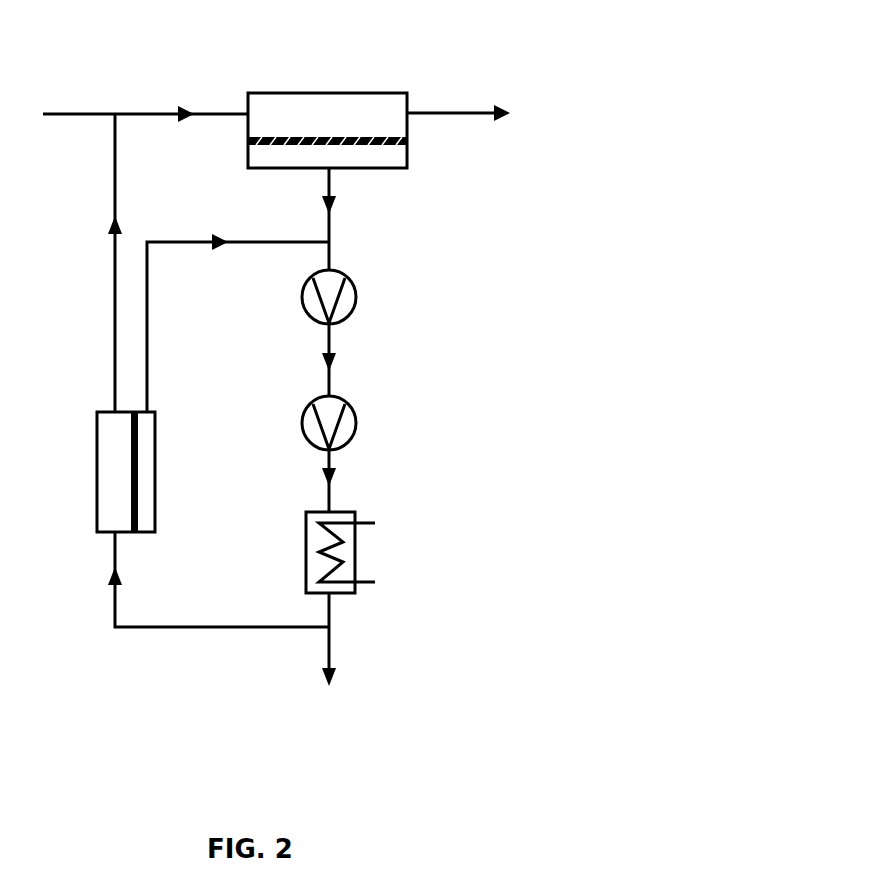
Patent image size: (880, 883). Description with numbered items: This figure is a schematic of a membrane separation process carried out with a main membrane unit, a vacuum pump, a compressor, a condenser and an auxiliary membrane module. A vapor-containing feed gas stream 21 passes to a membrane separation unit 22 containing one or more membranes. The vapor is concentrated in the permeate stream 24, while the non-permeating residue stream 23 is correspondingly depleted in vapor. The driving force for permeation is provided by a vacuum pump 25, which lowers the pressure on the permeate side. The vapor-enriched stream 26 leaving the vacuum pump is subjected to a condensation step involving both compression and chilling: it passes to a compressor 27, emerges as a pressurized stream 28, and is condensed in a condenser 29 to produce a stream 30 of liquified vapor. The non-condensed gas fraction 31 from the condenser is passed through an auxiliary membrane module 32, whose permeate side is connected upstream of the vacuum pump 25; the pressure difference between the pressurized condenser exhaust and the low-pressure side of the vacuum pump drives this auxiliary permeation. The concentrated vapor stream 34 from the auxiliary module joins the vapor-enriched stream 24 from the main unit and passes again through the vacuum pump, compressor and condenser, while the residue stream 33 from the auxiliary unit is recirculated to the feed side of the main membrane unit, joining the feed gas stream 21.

The vapor-containing feed gas stream 21 is at (145, 101).
The membrane separation unit 22 is at (318, 93).
The residue stream 23 is at (476, 113).
The permeate stream 24 is at (345, 219).
The vacuum pump 25 is at (356, 297).
The vapor-enriched stream 26 is at (312, 360).
The compressor 27 is at (356, 405).
The pressurized stream 28 is at (312, 481).
The condenser 29 is at (355, 512).
The liquified vapor stream 30 is at (330, 657).
The non-condensed gas fraction 31 is at (202, 579).
The auxiliary membrane module 32 is at (97, 455).
The residue stream from auxiliary unit 33 is at (95, 263).
The concentrated vapor stream 34 is at (238, 311).